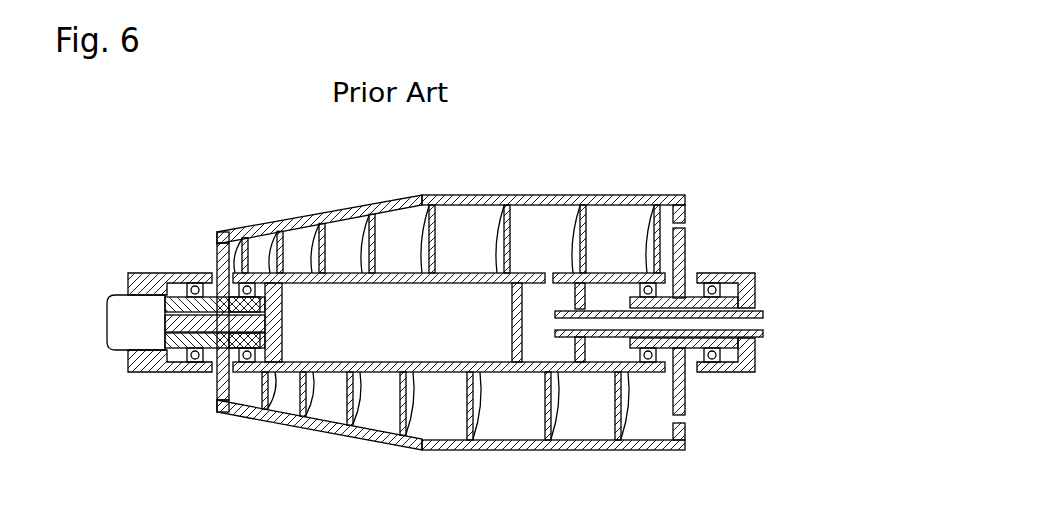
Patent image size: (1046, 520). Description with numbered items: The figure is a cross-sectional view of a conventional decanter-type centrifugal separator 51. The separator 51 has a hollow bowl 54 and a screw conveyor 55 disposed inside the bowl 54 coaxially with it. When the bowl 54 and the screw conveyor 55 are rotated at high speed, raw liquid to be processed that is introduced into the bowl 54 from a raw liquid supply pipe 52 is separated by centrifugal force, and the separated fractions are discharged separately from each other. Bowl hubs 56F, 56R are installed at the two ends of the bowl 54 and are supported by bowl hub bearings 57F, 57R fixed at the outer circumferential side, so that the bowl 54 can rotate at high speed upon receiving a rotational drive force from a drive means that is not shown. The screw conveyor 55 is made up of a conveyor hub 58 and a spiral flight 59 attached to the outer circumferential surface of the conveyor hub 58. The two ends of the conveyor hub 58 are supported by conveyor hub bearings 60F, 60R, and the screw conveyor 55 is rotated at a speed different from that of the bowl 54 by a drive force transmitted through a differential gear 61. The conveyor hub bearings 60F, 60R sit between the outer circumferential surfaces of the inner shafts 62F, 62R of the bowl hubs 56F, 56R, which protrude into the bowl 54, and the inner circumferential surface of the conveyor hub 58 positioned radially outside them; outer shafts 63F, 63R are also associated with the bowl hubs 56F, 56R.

The decanter-type centrifugal separator 51 is at (679, 119).
The raw liquid supply pipe 52 is at (535, 372).
The bowl 54 is at (397, 196).
The screw conveyor 55 is at (455, 271).
The bowl hub 56F is at (215, 231).
The bowl hub 56R is at (687, 206).
The bowl hub bearing 57F is at (182, 283).
The bowl hub bearing 57R is at (755, 281).
The conveyor hub 58 is at (433, 373).
The flight 59 is at (397, 402).
The conveyor hub bearing 60F is at (249, 286).
The conveyor hub bearing 60R is at (648, 285).
The differential gear 61 is at (107, 352).
The inner shaft 62F is at (272, 302).
The inner shaft 62R is at (628, 300).
The outer shaft 63F is at (172, 296).
The outer shaft 63R is at (763, 335).